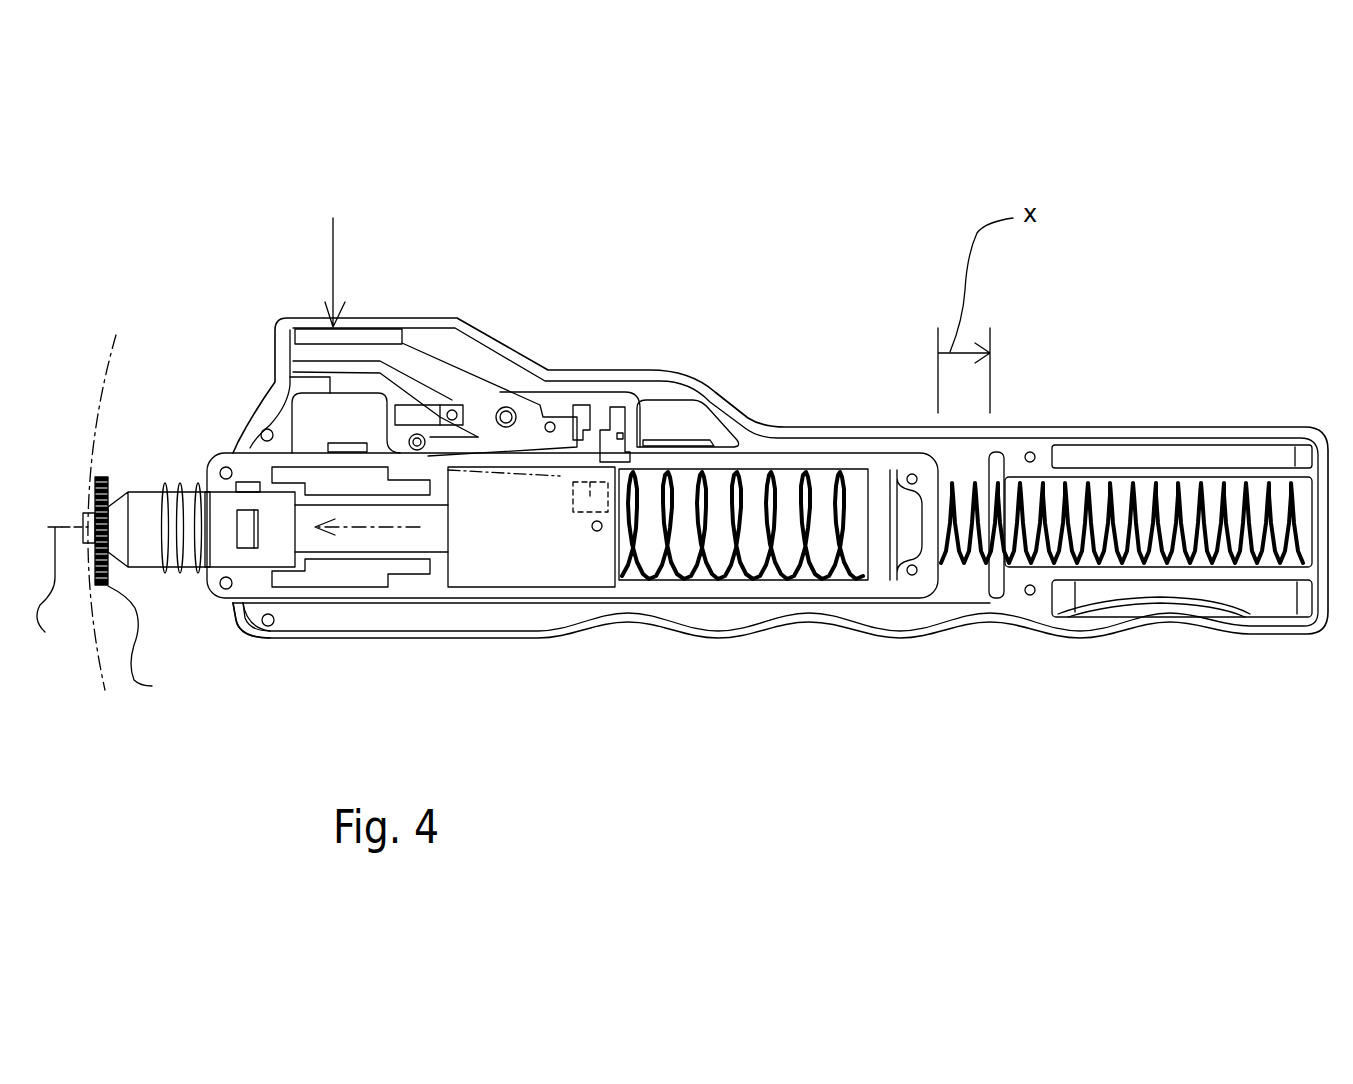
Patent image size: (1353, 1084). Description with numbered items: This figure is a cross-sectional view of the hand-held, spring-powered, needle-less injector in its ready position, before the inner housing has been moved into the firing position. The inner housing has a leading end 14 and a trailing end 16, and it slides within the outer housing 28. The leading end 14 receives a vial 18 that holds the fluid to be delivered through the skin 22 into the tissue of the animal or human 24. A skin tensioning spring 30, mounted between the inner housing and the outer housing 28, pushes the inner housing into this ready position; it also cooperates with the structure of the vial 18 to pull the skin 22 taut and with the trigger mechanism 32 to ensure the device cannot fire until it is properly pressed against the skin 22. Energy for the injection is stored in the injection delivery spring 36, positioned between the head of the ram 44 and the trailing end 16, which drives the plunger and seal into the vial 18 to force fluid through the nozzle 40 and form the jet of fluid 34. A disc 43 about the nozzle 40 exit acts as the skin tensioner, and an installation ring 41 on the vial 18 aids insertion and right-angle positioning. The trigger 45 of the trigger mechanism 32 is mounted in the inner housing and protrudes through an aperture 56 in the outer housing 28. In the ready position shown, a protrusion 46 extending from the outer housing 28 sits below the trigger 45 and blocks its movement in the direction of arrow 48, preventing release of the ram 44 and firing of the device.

The leading end 14 is at (205, 612).
The trailing end 16 is at (940, 588).
The vial 18 is at (152, 482).
The skin 22 is at (115, 367).
The animal or human 24 is at (83, 384).
The outer housing 28 is at (1218, 628).
The skin tensioning spring 30 is at (1147, 470).
The trigger mechanism 32 is at (532, 453).
The jet of fluid 34 is at (57, 591).
The injection delivery spring 36 is at (710, 565).
The nozzle 40 is at (83, 513).
The installation ring 41 is at (147, 643).
The disc 43 is at (162, 450).
The ram 44 is at (320, 548).
The trigger 45 is at (352, 333).
The protrusion 46 is at (455, 405).
The arrow 48 is at (333, 260).
The aperture 56 is at (515, 385).